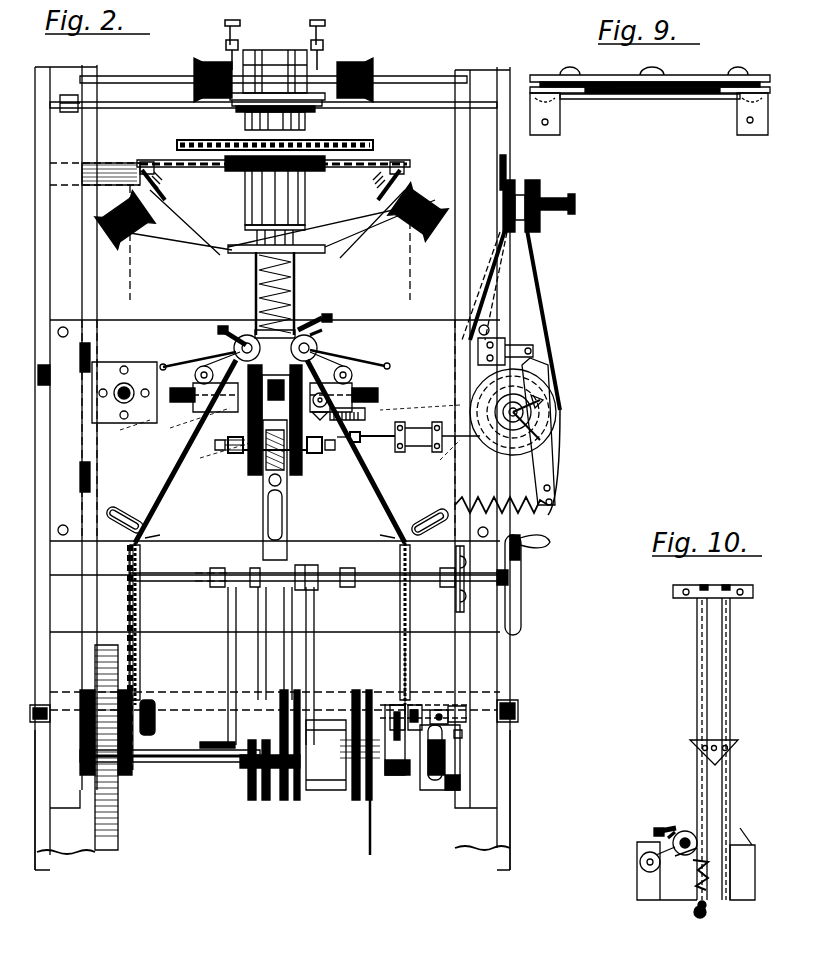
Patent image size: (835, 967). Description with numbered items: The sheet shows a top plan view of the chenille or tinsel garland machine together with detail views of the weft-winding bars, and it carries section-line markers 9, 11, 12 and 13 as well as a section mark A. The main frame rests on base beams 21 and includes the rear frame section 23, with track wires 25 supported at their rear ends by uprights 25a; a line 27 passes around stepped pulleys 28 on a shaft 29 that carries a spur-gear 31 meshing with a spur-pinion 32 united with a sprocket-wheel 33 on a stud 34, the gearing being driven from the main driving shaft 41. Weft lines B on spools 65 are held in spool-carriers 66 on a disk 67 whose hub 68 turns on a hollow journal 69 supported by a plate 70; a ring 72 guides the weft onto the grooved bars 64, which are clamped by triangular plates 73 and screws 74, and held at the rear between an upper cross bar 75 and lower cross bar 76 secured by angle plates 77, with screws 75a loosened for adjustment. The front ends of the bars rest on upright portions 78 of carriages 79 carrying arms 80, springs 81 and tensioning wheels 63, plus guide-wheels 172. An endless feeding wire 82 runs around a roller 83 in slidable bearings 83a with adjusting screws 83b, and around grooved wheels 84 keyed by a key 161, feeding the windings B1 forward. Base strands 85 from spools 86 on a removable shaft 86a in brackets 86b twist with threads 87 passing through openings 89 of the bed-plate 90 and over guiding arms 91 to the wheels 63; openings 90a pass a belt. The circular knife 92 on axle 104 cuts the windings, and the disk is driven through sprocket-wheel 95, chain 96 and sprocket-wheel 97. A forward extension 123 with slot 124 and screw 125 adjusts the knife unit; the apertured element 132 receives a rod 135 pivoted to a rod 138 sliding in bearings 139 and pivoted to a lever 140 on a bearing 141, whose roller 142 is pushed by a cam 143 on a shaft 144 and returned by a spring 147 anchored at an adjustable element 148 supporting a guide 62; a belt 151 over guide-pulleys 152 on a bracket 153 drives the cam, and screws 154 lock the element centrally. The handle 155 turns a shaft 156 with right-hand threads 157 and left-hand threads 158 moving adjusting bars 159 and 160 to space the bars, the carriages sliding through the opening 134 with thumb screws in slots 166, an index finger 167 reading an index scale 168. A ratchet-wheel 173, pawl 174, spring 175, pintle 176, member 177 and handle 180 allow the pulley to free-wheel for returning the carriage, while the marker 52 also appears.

In FIG. 2, the section line 13 is at (275, 60).
In FIG. 2, the section line 12 is at (338, 294).
In FIG. 2, the section line 11 is at (361, 320).
In FIG. 10, the section line 9 is at (679, 780).
In FIG. 2, the base beam 21 is at (274, 837).
In FIG. 2, the rear frame section 23 is at (150, 107).
In FIG. 2, the track wire 25 is at (35, 728).
In FIG. 2, the upright 25a is at (528, 708).
In FIG. 2, the line 27 is at (374, 838).
In FIG. 2, the stepped pulley 28 is at (372, 806).
In FIG. 2, the shaft 29 is at (195, 760).
In FIG. 2, the spur-gear 31 is at (118, 824).
In FIG. 2, the spur-pinion 32 is at (95, 694).
In FIG. 2, the sprocket-wheel 33 is at (142, 698).
In FIG. 2, the stud 34 is at (156, 712).
In FIG. 2, the main driving shaft 41 is at (38, 376).
In FIG. 2, the cam 52 is at (410, 700).
In FIG. 2, the guide 62 is at (148, 546).
In FIG. 2, the tensioning wheel 63 is at (240, 338).
In FIG. 2, the grooved bar 64 is at (257, 238).
In FIG. 9, the grooved bar 64 is at (650, 100).
In FIG. 10, the grooved bar 64 is at (724, 665).
In FIG. 2, the spool 65 is at (132, 238).
In FIG. 2, the spool-carrier 66 is at (185, 198).
In FIG. 2, the disk 67 is at (380, 162).
In FIG. 2, the hub 68 is at (245, 192).
In FIG. 2, the hollow journal 69 is at (245, 220).
In FIG. 2, the plate 70 is at (445, 105).
In FIG. 2, the ring 72 is at (328, 250).
In FIG. 2, the triangular plate 73 is at (256, 260).
In FIG. 9, the triangular plate 73 is at (625, 74).
In FIG. 10, the triangular plate 73 is at (692, 744).
In FIG. 9, the screw 74 is at (655, 72).
In FIG. 10, the screw 74 is at (705, 752).
In FIG. 2, the upper cross bar 75 is at (330, 72).
In FIG. 9, the upper cross bar 75 is at (545, 74).
In FIG. 10, the upper cross bar 75 is at (700, 591).
In FIG. 9, the screw 75a is at (735, 72).
In FIG. 10, the screw 75a is at (742, 588).
In FIG. 9, the lower cross bar 76 is at (600, 96).
In FIG. 2, the angle plate 77 is at (236, 108).
In FIG. 9, the angle plate 77 is at (560, 124).
In FIG. 2, the upright portion 78 is at (224, 400).
In FIG. 2, the carriage 79 is at (195, 406).
In FIG. 10, the carriage 79 is at (680, 898).
In FIG. 2, the arm 80 is at (282, 371).
In FIG. 10, the arm 80 is at (668, 870).
In FIG. 2, the spring 81 is at (333, 338).
In FIG. 10, the spring 81 is at (690, 832).
In FIG. 2, the endless feeding wire 82 is at (268, 50).
In FIG. 2, the roller 83 is at (232, 52).
In FIG. 10, the roller 83 is at (694, 860).
In FIG. 2, the slidable bearing 83a is at (322, 57).
In FIG. 2, the adjusting screw 83b is at (325, 24).
In FIG. 2, the grooved wheel 84 is at (250, 796).
In FIG. 2, the base strand 85 is at (295, 50).
In FIG. 2, the spool 86 is at (202, 84).
In FIG. 2, the removable shaft 86a is at (162, 77).
In FIG. 2, the bracket 86b is at (68, 95).
In FIG. 2, the thread 87 is at (190, 362).
In FIG. 2, the opening 89 is at (291, 365).
In FIG. 2, the bed-plate 90 is at (286, 447).
In FIG. 2, the opening 90a is at (90, 356).
In FIG. 2, the guiding arm 91 is at (345, 344).
In FIG. 10, the guiding arm 91 is at (655, 836).
In FIG. 2, the circular knife 92 is at (296, 330).
In FIG. 2, the sprocket-wheel 95 is at (245, 124).
In FIG. 2, the chain 96 is at (200, 140).
In FIG. 2, the sprocket-wheel 97 is at (177, 146).
In FIG. 2, the axle 104 is at (300, 476).
In FIG. 2, the forward extension 123 is at (287, 494).
In FIG. 2, the slot 124 is at (282, 530).
In FIG. 2, the screw 125 is at (281, 484).
In FIG. 2, the apertured element 132 is at (240, 445).
In FIG. 2, the opening 134 is at (246, 455).
In FIG. 2, the rod 135 is at (350, 440).
In FIG. 2, the rod 138 is at (444, 430).
In FIG. 2, the bearing 139 is at (420, 452).
In FIG. 2, the lever 140 is at (557, 472).
In FIG. 2, the bearing 141 is at (512, 342).
In FIG. 2, the roller 142 is at (556, 404).
In FIG. 2, the cam 143 is at (545, 418).
In FIG. 2, the shaft 144 is at (545, 432).
In FIG. 2, the spring 147 is at (540, 505).
In FIG. 2, the adjustable element 148 is at (108, 520).
In FIG. 2, the belt 151 is at (530, 260).
In FIG. 2, the guide-pulley 152 is at (525, 182).
In FIG. 2, the bracket 153 is at (172, 398).
In FIG. 2, the screw 154 is at (224, 445).
In FIG. 2, the handle 155 is at (522, 568).
In FIG. 2, the shaft 156 is at (445, 580).
In FIG. 2, the right-hand screw threads 157 is at (340, 560).
In FIG. 2, the left-hand screw threads 158 is at (200, 576).
In FIG. 2, the adjusting bar 159 is at (306, 672).
In FIG. 2, the adjusting bar 160 is at (228, 658).
In FIG. 2, the key 161 is at (212, 742).
In FIG. 2, the slot 166 is at (200, 345).
In FIG. 2, the index finger 167 is at (330, 414).
In FIG. 2, the index scale 168 is at (365, 416).
In FIG. 10, the guide-wheel 172 is at (692, 915).
In FIG. 2, the ratchet-wheel 173 is at (396, 776).
In FIG. 2, the pawl 174 is at (402, 714).
In FIG. 2, the spring 175 is at (460, 716).
In FIG. 2, the pintle 176 is at (450, 710).
In FIG. 2, the member 177 is at (436, 780).
In FIG. 2, the handle 180 is at (462, 782).
In FIG. 2, the chain A is at (143, 612).
In FIG. 2, the weft line B is at (198, 246).
In FIG. 2, the winding B1 is at (256, 296).